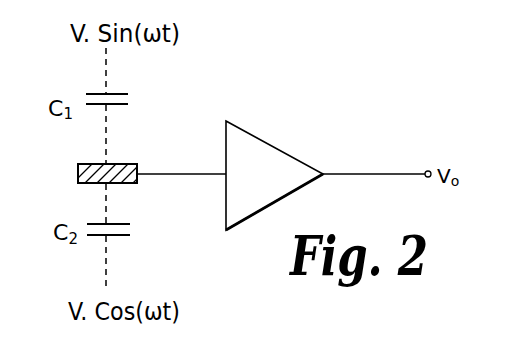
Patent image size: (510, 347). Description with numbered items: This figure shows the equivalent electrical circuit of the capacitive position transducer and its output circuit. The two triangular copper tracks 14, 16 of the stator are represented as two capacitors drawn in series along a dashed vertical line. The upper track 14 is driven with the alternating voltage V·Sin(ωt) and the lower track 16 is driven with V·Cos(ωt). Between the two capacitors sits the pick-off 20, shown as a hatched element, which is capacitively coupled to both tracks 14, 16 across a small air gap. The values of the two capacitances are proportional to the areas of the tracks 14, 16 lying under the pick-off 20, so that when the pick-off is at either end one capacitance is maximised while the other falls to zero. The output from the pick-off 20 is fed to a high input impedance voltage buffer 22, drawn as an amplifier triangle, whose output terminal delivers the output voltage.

The triangular section 14 is at (135, 101).
The triangular section 16 is at (137, 230).
The pick-off 20 is at (127, 163).
The high input impedance voltage buffer 22 is at (282, 162).